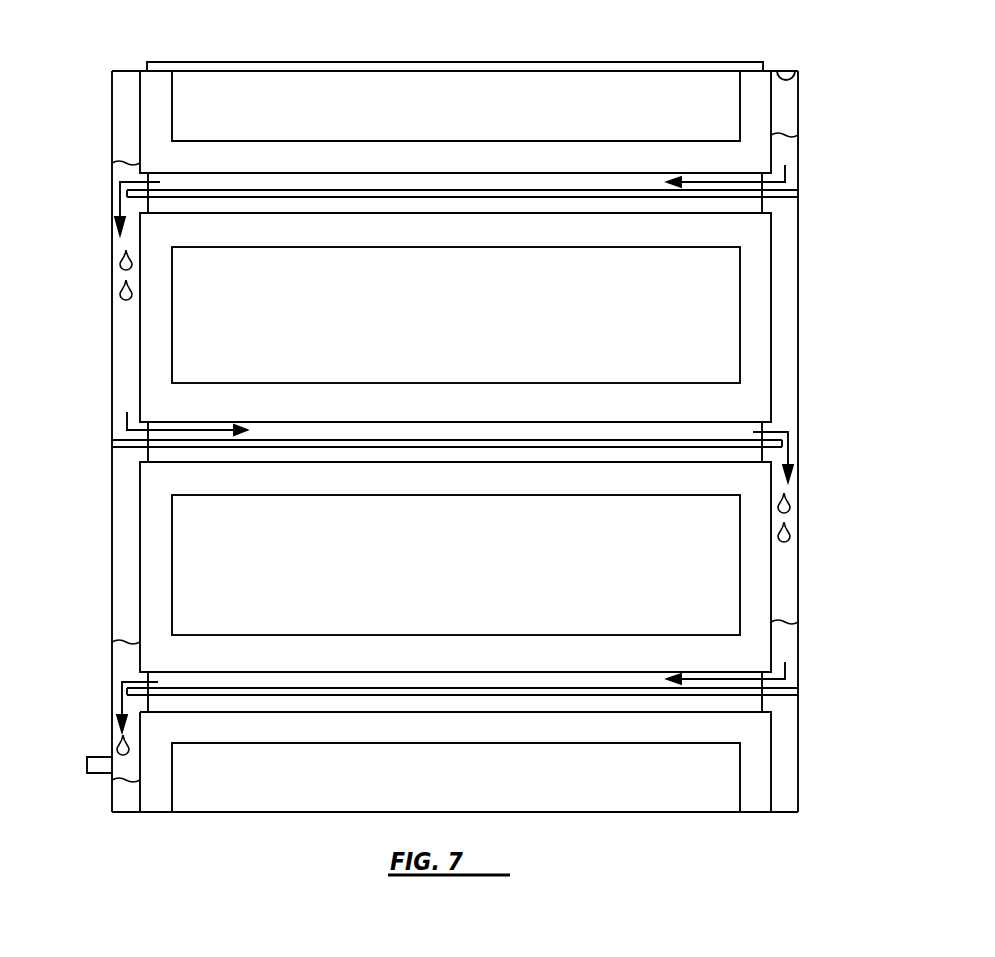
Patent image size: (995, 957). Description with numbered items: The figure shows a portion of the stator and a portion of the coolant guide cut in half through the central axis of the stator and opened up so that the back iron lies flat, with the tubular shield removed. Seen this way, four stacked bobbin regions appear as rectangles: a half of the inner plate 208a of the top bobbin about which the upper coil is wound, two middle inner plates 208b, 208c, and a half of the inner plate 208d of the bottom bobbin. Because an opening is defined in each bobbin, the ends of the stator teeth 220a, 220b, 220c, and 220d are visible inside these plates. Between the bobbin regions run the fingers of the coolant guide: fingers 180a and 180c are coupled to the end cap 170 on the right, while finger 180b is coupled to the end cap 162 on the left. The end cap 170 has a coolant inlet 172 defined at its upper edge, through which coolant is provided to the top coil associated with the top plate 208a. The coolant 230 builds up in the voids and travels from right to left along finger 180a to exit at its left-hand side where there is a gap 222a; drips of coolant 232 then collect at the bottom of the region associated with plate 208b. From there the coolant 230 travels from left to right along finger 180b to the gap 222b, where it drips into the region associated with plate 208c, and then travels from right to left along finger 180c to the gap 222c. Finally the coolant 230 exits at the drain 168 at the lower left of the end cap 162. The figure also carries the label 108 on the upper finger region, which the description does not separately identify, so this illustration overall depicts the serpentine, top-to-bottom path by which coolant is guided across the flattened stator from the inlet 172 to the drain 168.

The heat exchanger 108 is at (426, 132).
The end cap 162 is at (454, 441).
The drain 168 is at (102, 767).
The end cap 170 is at (800, 282).
The coolant inlet 172 is at (786, 72).
The finger 180a is at (426, 136).
The finger 180b is at (492, 406).
The finger 180c is at (462, 659).
The inner plate 208a is at (264, 171).
The inner plate 208b is at (265, 419).
The inner plate 208c is at (265, 669).
The inner plate 208d is at (265, 741).
The tooth 220a is at (472, 125).
The tooth 220b is at (472, 340).
The tooth 220c is at (472, 587).
The tooth 220d is at (472, 790).
The gap 222a is at (120, 191).
The gap 222b is at (792, 438).
The gap 222c is at (118, 690).
The coolant 230 is at (785, 155).
The drips of coolant 232 is at (125, 293).